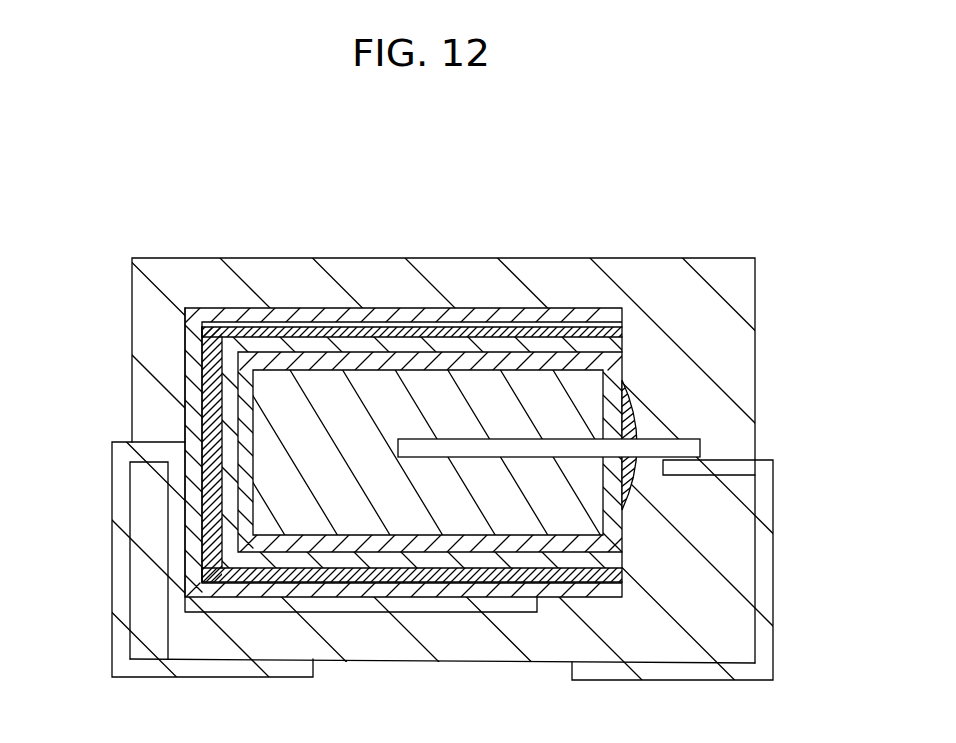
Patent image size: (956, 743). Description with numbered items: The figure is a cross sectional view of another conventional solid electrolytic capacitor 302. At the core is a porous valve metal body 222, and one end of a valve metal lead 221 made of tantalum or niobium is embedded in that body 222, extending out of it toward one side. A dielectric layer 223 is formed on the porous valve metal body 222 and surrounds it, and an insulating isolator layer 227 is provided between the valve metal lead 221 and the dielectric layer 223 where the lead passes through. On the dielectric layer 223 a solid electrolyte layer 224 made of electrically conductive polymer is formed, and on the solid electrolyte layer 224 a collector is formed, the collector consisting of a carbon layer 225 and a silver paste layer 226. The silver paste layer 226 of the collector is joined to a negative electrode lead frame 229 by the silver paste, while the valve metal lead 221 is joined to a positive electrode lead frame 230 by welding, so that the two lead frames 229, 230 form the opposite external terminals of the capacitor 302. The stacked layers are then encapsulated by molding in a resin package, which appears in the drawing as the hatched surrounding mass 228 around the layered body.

The solid electrolytic capacitor 302 is at (715, 196).
The valve metal lead 221 is at (665, 450).
The porous valve metal body 222 is at (595, 393).
The dielectric layer 223 is at (577, 352).
The solid electrolyte layer 224 is at (452, 325).
The carbon layer 225 is at (327, 307).
The silver paste layer 226 is at (197, 360).
The insulating isolator layer 227 is at (625, 463).
The outer body / mold 228 is at (212, 282).
The negative electrode lead frame 229 is at (113, 653).
The positive electrode lead frame 230 is at (772, 677).